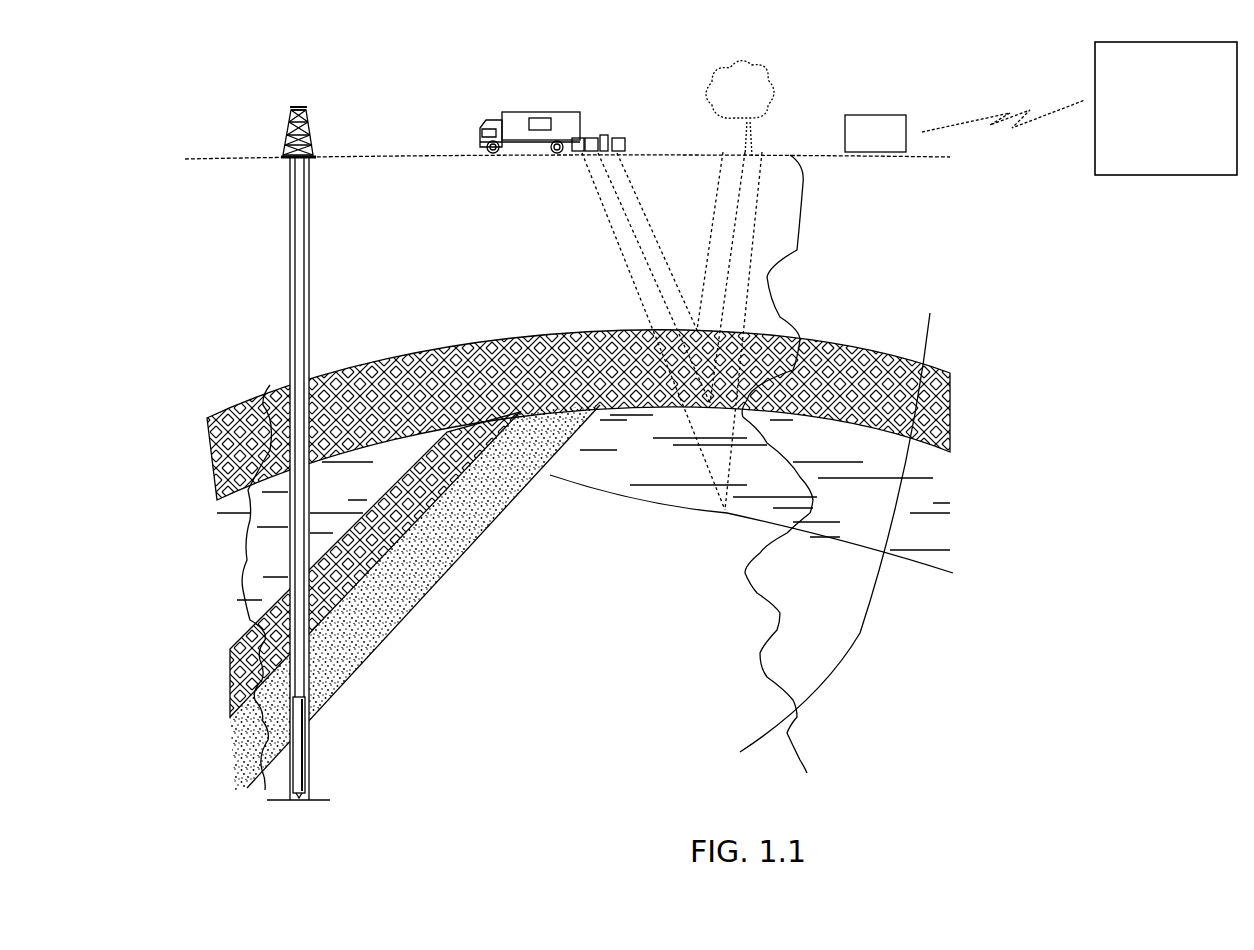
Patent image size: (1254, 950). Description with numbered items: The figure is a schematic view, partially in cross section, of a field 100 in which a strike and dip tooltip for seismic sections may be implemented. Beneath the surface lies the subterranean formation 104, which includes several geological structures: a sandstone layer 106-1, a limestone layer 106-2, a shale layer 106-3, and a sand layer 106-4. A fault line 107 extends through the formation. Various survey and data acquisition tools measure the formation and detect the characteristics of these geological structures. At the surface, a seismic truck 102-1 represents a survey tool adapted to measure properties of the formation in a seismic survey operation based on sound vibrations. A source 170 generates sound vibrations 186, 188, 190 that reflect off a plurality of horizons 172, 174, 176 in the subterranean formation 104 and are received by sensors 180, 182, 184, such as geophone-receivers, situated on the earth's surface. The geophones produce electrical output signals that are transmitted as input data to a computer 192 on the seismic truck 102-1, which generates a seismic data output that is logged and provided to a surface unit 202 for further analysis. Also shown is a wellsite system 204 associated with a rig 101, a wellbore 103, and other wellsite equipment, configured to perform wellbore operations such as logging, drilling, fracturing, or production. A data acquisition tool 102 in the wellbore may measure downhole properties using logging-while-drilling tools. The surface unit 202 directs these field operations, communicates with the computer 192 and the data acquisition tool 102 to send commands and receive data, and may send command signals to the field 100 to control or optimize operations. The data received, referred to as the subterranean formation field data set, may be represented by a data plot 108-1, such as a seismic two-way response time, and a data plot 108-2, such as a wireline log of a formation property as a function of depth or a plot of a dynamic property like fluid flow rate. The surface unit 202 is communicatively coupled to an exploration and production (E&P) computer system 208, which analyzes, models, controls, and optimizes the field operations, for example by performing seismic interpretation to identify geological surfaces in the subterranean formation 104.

The field 100 is at (873, 57).
The rig 101 is at (284, 109).
The data acquisition tool 102 is at (305, 750).
The seismic truck 102-1 is at (515, 109).
The wellbore 103 is at (313, 262).
The subterranean formation 104 is at (602, 591).
The sandstone layer 106-1 is at (441, 396).
The limestone layer 106-2 is at (368, 498).
The shale layer 106-3 is at (428, 511).
The sand layer 106-4 is at (466, 562).
The fault line 107 is at (927, 337).
The data plot 108-1 is at (775, 628).
The data plot 108-2 is at (257, 552).
The source 170 is at (739, 87).
The horizon 172 is at (625, 329).
The horizon 174 is at (578, 404).
The horizon 176 is at (702, 511).
The sensor 180 is at (621, 138).
The sensor 182 is at (598, 139).
The sensor 184 is at (584, 137).
The sound vibration 186 is at (754, 244).
The sound vibration 188 is at (736, 242).
The sound vibration 190 is at (714, 237).
The computer 192 is at (541, 111).
The surface unit 202 is at (893, 143).
The wellsite system 204 is at (320, 130).
The exploration and production (E&P) computer system 208 is at (1154, 143).